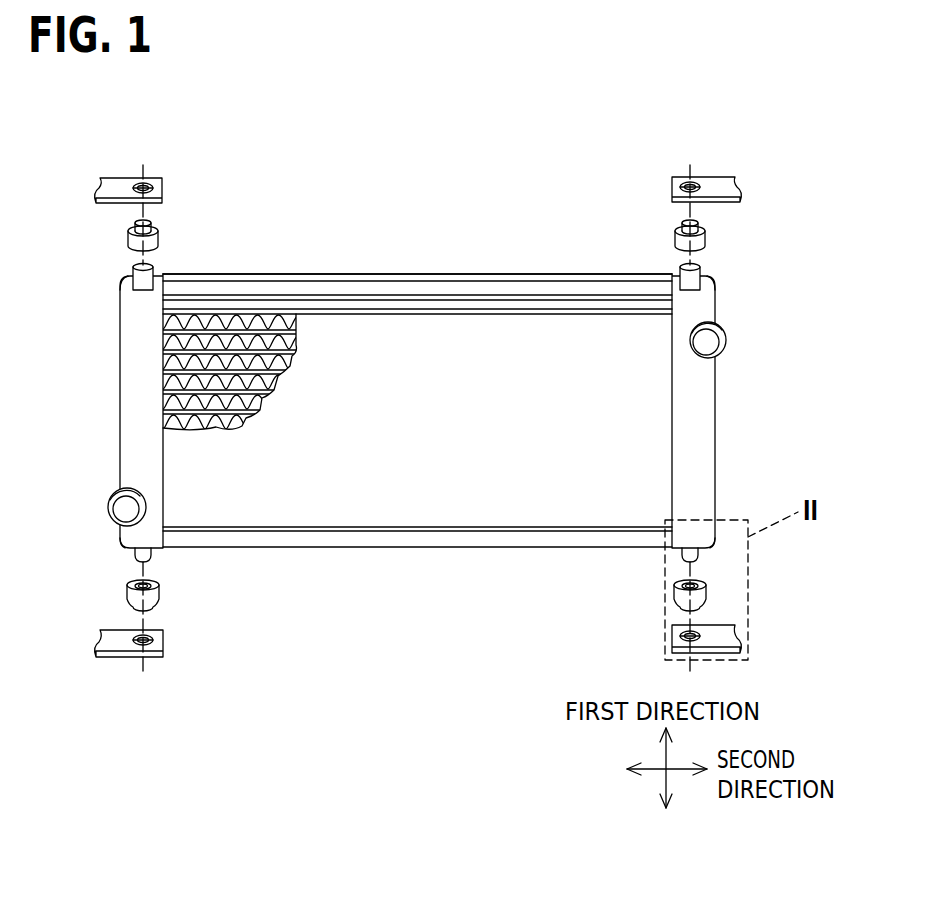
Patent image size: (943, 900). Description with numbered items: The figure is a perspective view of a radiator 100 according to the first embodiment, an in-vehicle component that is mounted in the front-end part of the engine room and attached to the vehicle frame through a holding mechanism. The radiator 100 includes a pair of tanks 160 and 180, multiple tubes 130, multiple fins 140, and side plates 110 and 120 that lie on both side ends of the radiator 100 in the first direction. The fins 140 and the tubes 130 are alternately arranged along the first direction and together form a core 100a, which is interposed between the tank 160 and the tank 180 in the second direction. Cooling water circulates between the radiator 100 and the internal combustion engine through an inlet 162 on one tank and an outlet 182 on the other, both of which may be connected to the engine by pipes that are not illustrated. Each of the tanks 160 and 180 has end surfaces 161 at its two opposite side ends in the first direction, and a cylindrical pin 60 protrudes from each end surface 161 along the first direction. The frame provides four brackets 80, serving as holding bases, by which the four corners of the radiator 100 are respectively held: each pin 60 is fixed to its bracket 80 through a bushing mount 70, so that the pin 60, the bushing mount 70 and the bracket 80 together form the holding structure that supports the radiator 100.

The radiator 100 is at (392, 266).
The core 100a is at (250, 322).
The side plate 110 is at (190, 275).
The side plate 120 is at (202, 549).
The tube 130 is at (167, 348).
The fin 140 is at (167, 317).
The tank 160 is at (717, 472).
The end surface 161 is at (130, 285).
The inlet 162 is at (728, 338).
The tank 180 is at (120, 457).
The outlet 182 is at (108, 518).
The pin 60 is at (130, 277).
The bushing mount 70 is at (127, 234).
The bracket 80 is at (103, 183).